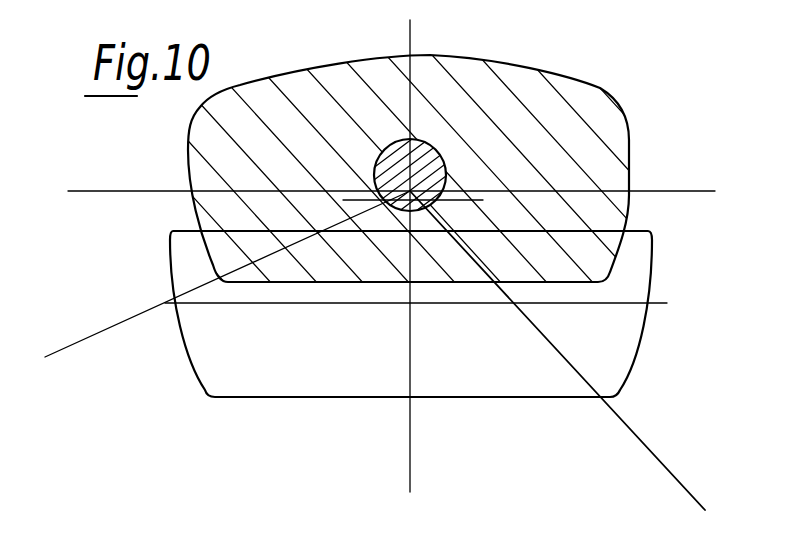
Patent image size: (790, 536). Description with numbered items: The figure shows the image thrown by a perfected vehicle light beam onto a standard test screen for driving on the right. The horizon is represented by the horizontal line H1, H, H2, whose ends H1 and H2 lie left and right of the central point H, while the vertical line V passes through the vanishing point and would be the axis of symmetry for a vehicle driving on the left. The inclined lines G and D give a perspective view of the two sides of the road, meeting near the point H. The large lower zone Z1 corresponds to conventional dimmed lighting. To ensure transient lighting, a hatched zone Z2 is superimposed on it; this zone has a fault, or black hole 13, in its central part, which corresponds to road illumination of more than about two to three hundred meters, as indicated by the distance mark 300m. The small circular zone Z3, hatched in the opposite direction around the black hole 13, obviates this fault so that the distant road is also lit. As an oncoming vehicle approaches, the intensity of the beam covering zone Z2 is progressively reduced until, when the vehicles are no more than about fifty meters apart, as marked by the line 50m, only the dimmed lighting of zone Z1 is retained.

The black hole 13 is at (395, 147).
The zone Z1 is at (280, 348).
The zone Z2 is at (518, 128).
The zone Z3 is at (407, 143).
The vertical line VV V is at (410, 256).
The horizon line point H1 is at (225, 192).
The horizon line point H2 is at (575, 190).
The horizon point H is at (447, 172).
The line G is at (227, 285).
The line D is at (559, 350).
The 50 meter distance line 50m is at (444, 297).
The 300 meter distance indication 300m is at (442, 207).